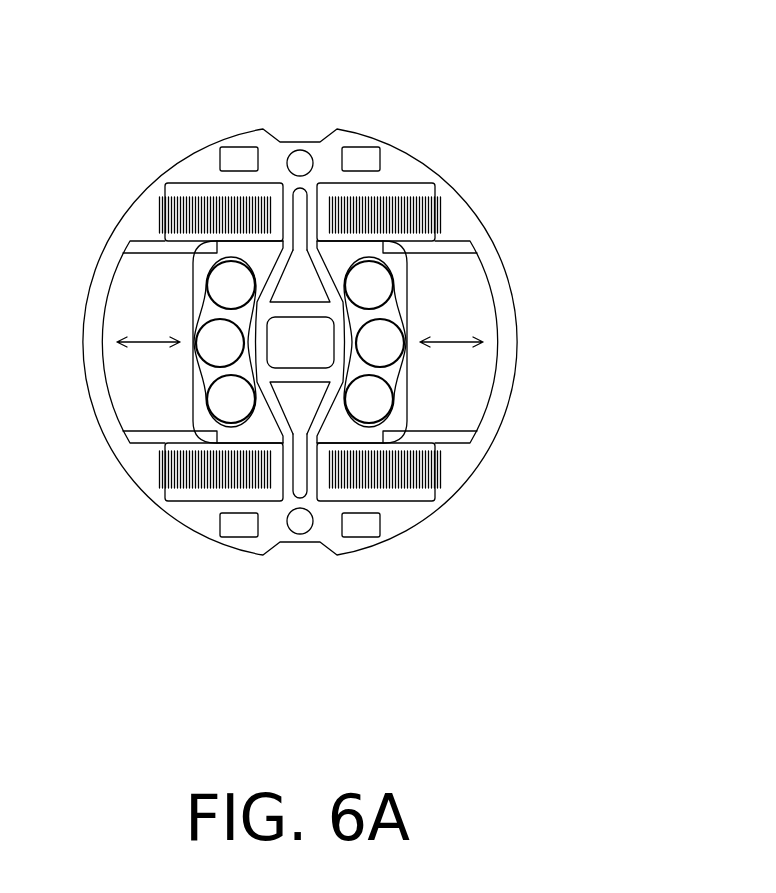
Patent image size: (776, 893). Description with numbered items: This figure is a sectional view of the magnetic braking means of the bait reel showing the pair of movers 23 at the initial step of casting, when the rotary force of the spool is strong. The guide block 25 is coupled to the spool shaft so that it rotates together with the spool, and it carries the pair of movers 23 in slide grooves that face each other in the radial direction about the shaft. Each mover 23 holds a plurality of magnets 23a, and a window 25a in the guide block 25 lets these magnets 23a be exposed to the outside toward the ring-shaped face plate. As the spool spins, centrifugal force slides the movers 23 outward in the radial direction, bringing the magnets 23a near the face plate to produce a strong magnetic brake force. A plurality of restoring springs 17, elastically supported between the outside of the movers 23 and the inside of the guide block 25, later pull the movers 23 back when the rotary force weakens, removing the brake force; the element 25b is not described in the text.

The restoring springs 17 is at (438, 500).
The movers 23 is at (405, 382).
The magnets 23a is at (372, 283).
The guide block 25 is at (300, 540).
The window 25a is at (492, 292).
The coil 25b is at (180, 242).